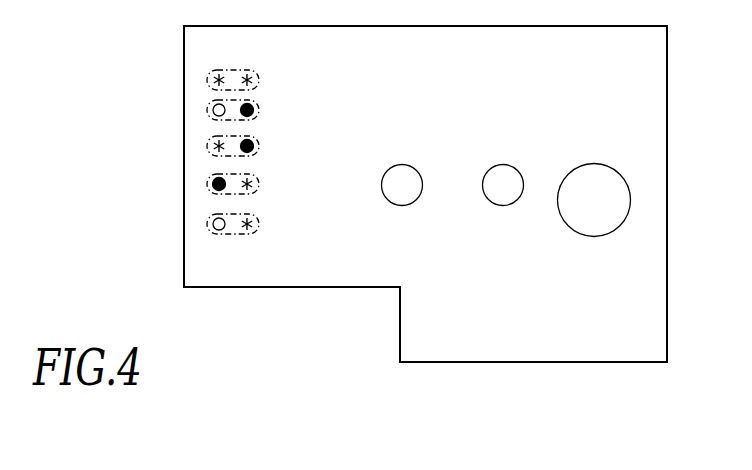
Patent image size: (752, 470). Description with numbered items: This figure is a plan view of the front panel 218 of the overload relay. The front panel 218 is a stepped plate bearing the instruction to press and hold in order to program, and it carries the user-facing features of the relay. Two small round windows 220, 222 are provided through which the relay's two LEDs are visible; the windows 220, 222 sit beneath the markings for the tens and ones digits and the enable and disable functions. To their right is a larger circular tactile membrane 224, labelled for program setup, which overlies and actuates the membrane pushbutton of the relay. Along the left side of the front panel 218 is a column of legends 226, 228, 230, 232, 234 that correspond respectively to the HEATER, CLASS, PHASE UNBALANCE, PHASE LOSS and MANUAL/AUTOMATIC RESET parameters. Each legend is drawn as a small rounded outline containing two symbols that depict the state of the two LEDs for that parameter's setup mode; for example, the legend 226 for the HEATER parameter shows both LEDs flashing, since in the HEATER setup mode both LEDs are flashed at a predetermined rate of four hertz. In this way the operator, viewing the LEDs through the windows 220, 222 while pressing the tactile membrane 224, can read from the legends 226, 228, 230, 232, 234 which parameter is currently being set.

The front panel 218 is at (326, 331).
The window 220 is at (392, 204).
The window 222 is at (493, 204).
The tactile membrane 224 is at (574, 235).
The legend 226 is at (207, 80).
The legend 228 is at (207, 109).
The legend 230 is at (207, 145).
The legend 232 is at (207, 183).
The legend 234 is at (207, 223).